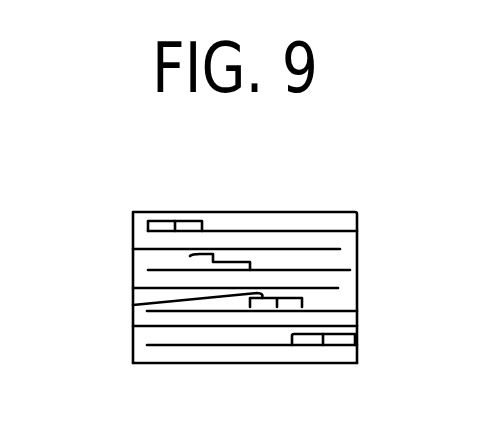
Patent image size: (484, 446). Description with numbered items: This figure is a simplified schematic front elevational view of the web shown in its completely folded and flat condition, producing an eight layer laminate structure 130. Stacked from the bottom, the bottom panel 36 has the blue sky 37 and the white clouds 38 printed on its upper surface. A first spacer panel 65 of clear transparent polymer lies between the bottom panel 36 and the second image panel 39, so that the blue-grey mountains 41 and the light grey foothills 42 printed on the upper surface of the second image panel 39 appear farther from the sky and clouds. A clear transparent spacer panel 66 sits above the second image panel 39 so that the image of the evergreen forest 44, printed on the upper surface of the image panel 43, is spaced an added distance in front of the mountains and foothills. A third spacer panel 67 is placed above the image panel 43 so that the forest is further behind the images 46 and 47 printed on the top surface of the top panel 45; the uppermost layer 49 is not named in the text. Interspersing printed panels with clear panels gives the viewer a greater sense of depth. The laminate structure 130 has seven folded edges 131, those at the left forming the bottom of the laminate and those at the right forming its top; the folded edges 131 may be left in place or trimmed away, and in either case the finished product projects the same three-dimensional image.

The laminate structure 130 is at (350, 183).
The top layer 49 is at (222, 224).
The top panel 45 is at (244, 245).
The image 46 is at (160, 220).
The image 47 is at (190, 220).
The third spacer panel 67 is at (283, 258).
The image panel 43 is at (345, 258).
The image of the evergreen forest 44 is at (190, 256).
The light grey foothills 42 is at (133, 305).
The blue-grey mountains 41 is at (292, 298).
The folded edges 131 is at (325, 280).
The spacer panel 66 is at (217, 300).
The second image panel 39 is at (238, 312).
The first spacer panel 65 is at (265, 330).
The white clouds 38 is at (314, 333).
The blue sky 37 is at (340, 333).
The bottom panel 36 is at (298, 348).